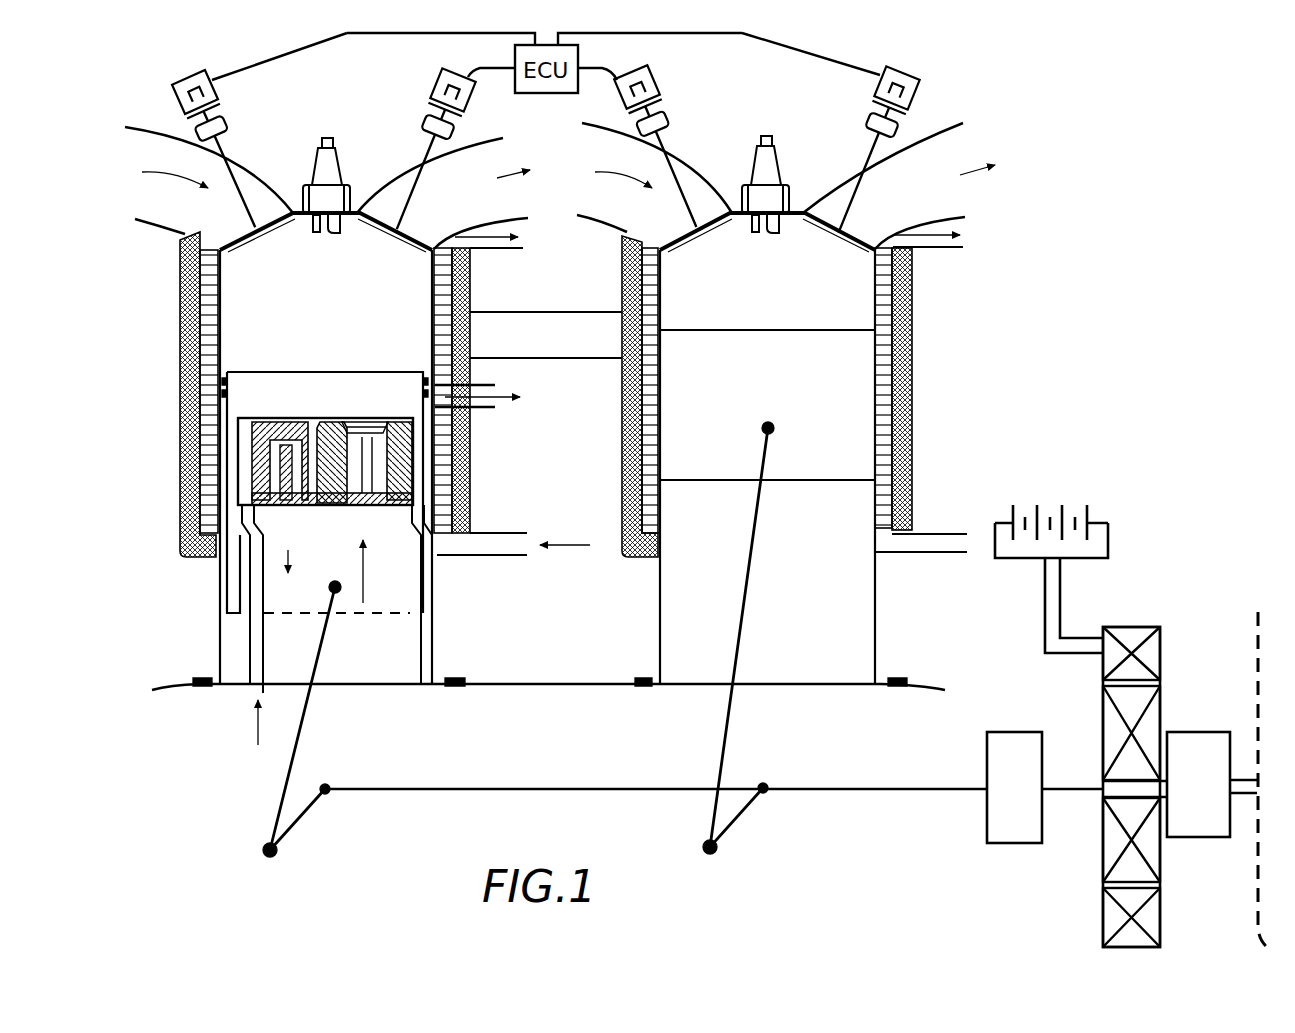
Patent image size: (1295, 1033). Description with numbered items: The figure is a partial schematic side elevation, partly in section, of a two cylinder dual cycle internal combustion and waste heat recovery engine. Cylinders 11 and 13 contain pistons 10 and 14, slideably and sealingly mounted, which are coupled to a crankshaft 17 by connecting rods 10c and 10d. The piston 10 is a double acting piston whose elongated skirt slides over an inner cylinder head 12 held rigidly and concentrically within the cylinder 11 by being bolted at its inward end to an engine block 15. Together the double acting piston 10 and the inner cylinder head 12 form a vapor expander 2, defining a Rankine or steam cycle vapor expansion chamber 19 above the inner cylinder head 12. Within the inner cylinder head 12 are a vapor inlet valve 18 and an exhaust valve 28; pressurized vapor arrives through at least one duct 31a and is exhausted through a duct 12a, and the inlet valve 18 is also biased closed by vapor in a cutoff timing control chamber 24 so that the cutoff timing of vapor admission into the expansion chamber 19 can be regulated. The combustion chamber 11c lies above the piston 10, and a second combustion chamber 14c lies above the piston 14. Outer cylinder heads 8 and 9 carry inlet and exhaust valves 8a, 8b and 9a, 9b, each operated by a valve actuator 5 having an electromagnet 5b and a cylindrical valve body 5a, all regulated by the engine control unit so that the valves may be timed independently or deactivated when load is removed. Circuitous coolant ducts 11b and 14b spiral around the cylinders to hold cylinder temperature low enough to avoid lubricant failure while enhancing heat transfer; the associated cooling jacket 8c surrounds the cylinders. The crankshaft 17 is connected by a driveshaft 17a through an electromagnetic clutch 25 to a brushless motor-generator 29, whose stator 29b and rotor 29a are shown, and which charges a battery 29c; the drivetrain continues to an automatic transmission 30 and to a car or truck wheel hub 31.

The vapor expander 2 is at (285, 366).
The valve actuator 5 is at (230, 98).
The cylindrical valve body 5a is at (227, 117).
The electromagnet 5b is at (176, 96).
The outer cylinder head 8 is at (355, 203).
The inlet valve 8a is at (237, 200).
The exhaust valve 8b is at (413, 203).
The cooling jacket 8c is at (178, 283).
The outer cylinder head 9 is at (737, 210).
The inlet valve 9a is at (678, 194).
The exhaust valve 9b is at (853, 206).
The piston 10 is at (388, 370).
The connecting rod 10c is at (287, 775).
The connecting rod 10d is at (727, 731).
The cylinder 11 is at (426, 280).
The circuitous coolant duct 11b is at (208, 283).
The combustion chamber 11c is at (326, 246).
The inner cylinder head 12 is at (395, 436).
The exhaust duct 12a is at (387, 507).
The cylinder 13 is at (658, 300).
The piston 14 is at (847, 330).
The circuitous coolant duct 14b is at (888, 292).
The second combustion chamber 14c is at (767, 244).
The engine block 15 is at (543, 683).
The crankshaft 17 is at (432, 790).
The driveshaft 17a is at (925, 791).
The vapor inlet valve 18 is at (263, 418).
The vapor expansion chamber 19 is at (325, 492).
The cutoff timing control chamber 24 is at (293, 487).
The electromagnetic clutch 25 is at (1013, 845).
The exhaust valve 28 is at (335, 420).
The brushless motor-generator 29 is at (1160, 630).
The rotor 29a is at (1103, 853).
The stator 29b is at (1162, 650).
The battery 29c is at (1013, 523).
The automatic transmission 30 is at (1212, 732).
The wheel hub 31 is at (1270, 603).
The duct 31a is at (247, 577).